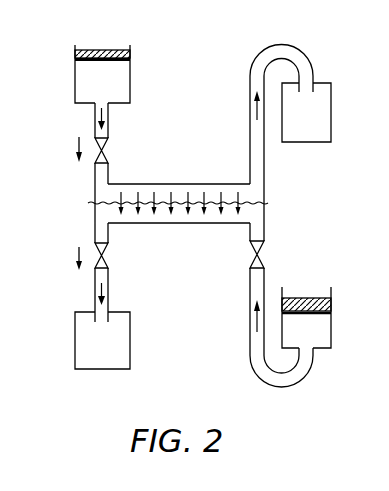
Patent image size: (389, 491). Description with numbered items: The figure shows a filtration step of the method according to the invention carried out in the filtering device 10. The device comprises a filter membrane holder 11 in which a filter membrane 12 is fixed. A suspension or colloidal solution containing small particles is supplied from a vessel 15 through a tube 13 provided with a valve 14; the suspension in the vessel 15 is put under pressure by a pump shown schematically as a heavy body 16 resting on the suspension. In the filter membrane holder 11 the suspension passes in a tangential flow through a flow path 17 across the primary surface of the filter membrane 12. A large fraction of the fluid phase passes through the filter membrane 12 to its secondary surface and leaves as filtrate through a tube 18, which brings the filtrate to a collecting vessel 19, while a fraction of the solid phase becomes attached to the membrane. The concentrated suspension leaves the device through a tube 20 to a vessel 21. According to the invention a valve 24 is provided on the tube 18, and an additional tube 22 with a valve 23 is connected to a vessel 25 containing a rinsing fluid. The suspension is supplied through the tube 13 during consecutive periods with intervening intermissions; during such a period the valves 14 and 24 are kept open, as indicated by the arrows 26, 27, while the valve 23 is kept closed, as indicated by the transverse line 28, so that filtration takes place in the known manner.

The filtering device 10 is at (75, 212).
The filter membrane holder 11 is at (143, 224).
The filter membrane 12 is at (195, 206).
The tube 13 is at (95, 178).
The valve 14 is at (109, 157).
The vessel 15 is at (75, 88).
The heavy body 16 is at (101, 49).
The flow path 17 is at (163, 190).
The tube 18 is at (94, 272).
The collecting vessel 19 is at (131, 337).
The tube 20 is at (250, 158).
The vessel 21 is at (307, 143).
The additional tube 22 is at (265, 235).
The valve 23 is at (253, 263).
The valve 24 is at (109, 257).
The vessel 25 is at (330, 350).
The arrow 26 is at (79, 146).
The arrow 27 is at (79, 256).
The transverse line 28 is at (259, 258).